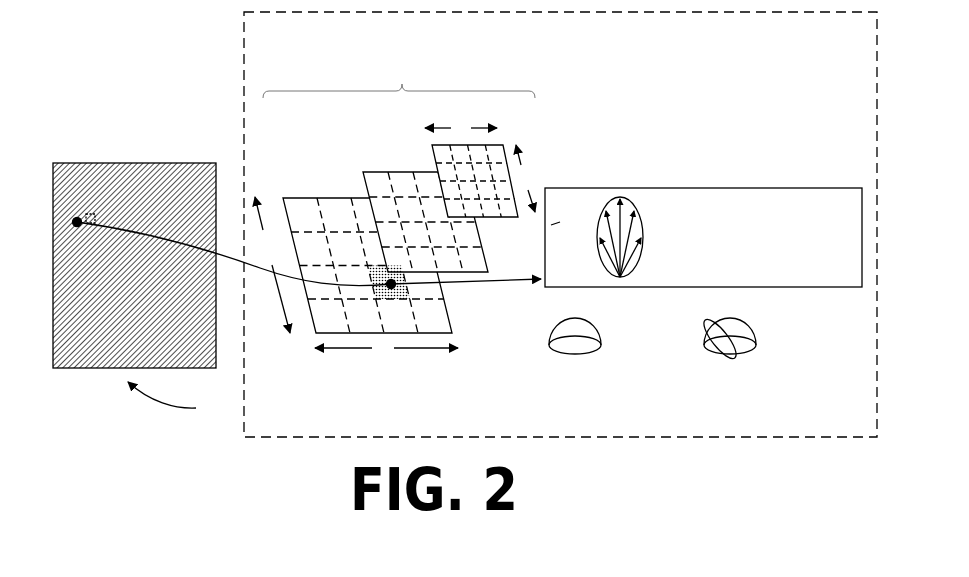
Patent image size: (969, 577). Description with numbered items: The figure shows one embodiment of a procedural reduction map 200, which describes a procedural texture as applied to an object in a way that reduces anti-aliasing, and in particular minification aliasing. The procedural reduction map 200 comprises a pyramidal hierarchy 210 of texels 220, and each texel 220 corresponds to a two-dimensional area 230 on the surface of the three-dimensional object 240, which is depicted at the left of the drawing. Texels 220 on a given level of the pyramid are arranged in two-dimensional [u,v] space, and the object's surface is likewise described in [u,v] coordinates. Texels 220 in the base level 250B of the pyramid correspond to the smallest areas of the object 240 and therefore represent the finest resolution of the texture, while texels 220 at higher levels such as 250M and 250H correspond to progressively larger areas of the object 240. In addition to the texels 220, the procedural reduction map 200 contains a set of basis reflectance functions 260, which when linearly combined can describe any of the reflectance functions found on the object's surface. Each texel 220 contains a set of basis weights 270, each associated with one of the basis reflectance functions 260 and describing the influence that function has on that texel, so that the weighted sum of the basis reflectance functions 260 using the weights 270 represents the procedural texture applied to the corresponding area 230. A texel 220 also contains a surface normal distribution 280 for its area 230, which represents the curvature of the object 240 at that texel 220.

The procedural reduction map 200 is at (560, 224).
The pyramidal hierarchy 210 is at (401, 83).
The texel 220 is at (425, 310).
The two-dimensional area 230 is at (130, 256).
The three-dimensional object 240 is at (180, 401).
The base level 250B is at (297, 198).
The higher pyramid level 250M is at (363, 172).
The high (coarsest) level map 250H is at (432, 145).
The basis reflectance functions 260 is at (700, 379).
The basis weights 270 is at (748, 268).
The surface normal distribution 280 is at (643, 226).